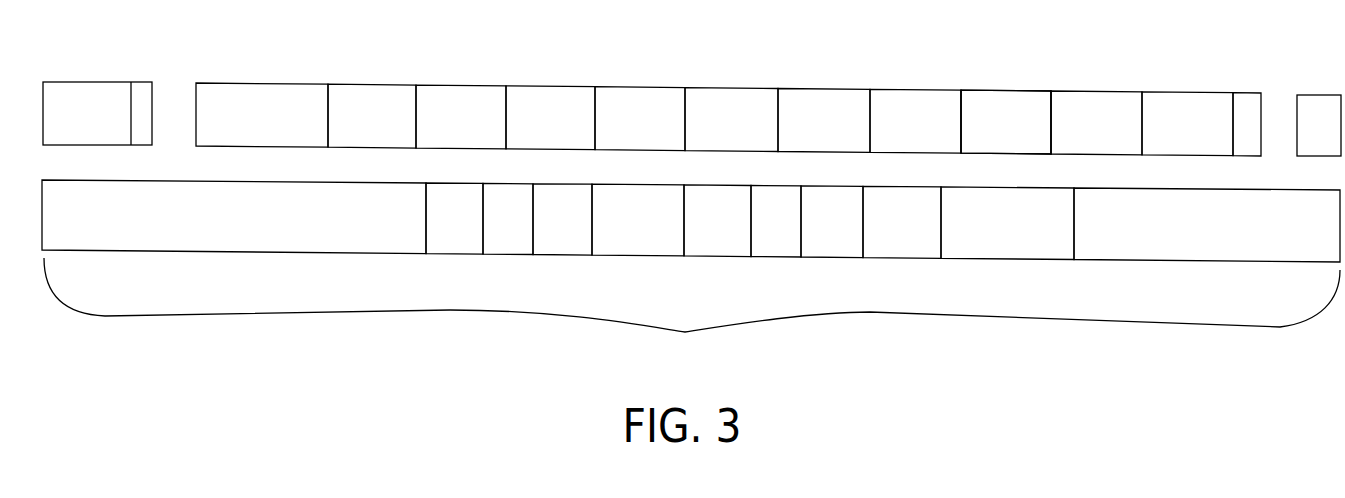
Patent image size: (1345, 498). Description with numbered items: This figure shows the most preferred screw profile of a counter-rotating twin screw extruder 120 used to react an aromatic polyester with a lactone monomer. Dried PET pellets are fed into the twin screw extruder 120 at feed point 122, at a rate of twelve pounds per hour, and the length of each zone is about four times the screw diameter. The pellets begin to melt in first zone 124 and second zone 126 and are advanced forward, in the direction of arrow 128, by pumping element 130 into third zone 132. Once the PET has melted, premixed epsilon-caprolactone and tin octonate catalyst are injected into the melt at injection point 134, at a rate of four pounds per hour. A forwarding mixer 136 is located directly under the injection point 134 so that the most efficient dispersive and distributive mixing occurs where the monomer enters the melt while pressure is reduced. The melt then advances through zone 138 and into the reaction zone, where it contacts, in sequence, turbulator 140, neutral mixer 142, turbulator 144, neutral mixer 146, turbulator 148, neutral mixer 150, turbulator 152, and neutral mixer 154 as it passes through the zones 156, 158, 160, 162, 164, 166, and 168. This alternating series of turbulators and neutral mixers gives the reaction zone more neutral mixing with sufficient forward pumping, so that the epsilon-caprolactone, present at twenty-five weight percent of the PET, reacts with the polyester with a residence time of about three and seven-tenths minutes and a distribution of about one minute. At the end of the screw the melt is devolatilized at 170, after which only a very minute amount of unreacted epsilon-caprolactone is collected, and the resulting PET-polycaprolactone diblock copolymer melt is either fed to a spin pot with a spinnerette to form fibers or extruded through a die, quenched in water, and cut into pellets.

The twin screw extruder 120 is at (692, 313).
The feed point 122 is at (1279, 105).
The first zone 124 is at (1233, 93).
The second zone 126 is at (1142, 92).
The arrow 128 is at (1212, 170).
The pumping element 130 is at (1186, 232).
The third zone 132 is at (1051, 91).
The injection point 134 is at (1003, 122).
The forwarding mixer 136 is at (986, 232).
The zone 138 is at (961, 90).
The turbulator 140 is at (881, 232).
The neutral mixer 142 is at (811, 232).
The turbulator 144 is at (755, 232).
The neutral mixer 146 is at (696, 232).
The turbulator 148 is at (617, 232).
The neutral mixer 150 is at (584, 232).
The turbulator 152 is at (487, 232).
The neutral mixer 154 is at (476, 232).
The zone 156 is at (870, 89).
The zone 158 is at (778, 88).
The zone 160 is at (685, 88).
The zone 162 is at (595, 87).
The zone 164 is at (506, 86).
The zone 166 is at (416, 85).
The zone 168 is at (328, 84).
The devolatilization point 170 is at (174, 97).